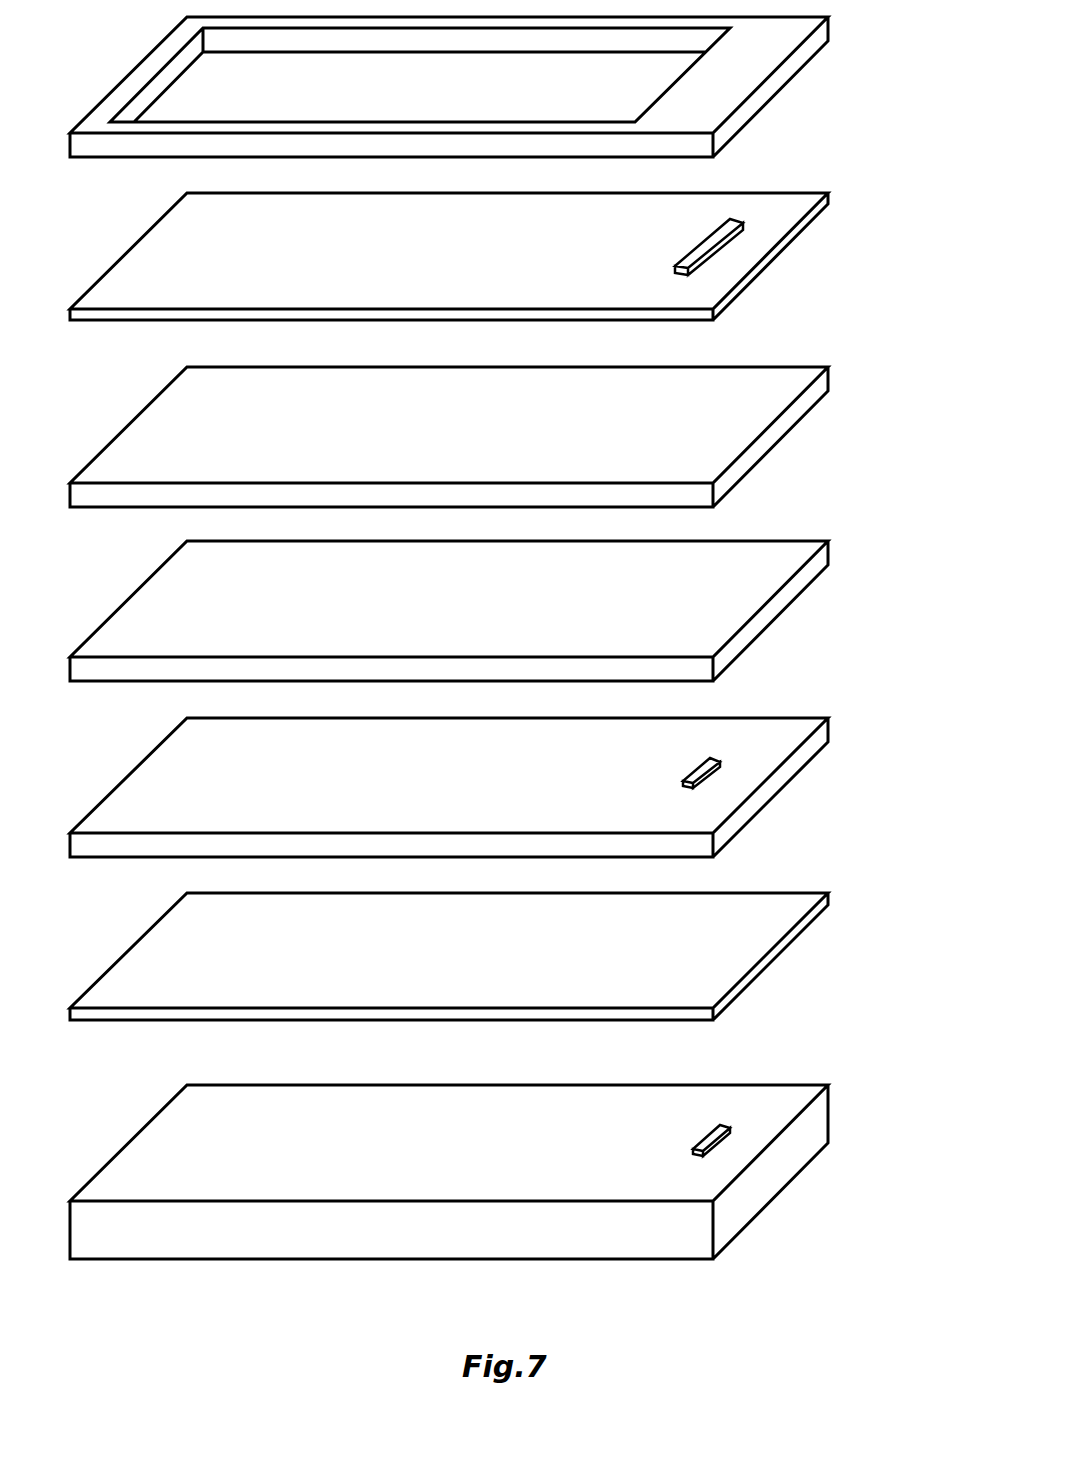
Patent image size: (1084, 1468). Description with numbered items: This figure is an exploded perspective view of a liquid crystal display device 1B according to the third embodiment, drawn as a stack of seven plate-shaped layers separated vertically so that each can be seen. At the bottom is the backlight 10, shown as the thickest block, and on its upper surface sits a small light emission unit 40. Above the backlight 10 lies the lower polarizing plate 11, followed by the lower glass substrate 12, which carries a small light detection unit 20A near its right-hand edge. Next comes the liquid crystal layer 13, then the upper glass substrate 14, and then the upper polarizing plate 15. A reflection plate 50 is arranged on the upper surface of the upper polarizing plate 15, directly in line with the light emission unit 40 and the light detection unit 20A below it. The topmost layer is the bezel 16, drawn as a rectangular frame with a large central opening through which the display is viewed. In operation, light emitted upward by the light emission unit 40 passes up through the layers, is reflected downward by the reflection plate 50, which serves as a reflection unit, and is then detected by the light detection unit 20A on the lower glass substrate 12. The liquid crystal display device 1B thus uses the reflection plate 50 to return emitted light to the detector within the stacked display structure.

The bezel 16 is at (800, 57).
The upper polarizing plate 15 is at (802, 228).
The reflection plate 50 is at (720, 250).
The upper glass substrate 14 is at (800, 407).
The liquid crystal layer 13 is at (800, 583).
The lower glass substrate 12 is at (800, 755).
The light detection unit 20A is at (710, 768).
The lower polarizing plate 11 is at (800, 927).
The backlight 10 is at (798, 1142).
The light emission unit 40 is at (725, 1135).
The liquid crystal display device 1B is at (866, 1333).